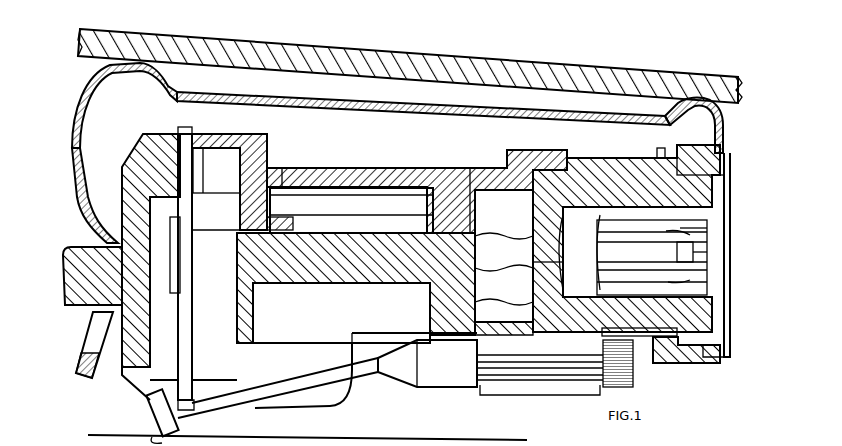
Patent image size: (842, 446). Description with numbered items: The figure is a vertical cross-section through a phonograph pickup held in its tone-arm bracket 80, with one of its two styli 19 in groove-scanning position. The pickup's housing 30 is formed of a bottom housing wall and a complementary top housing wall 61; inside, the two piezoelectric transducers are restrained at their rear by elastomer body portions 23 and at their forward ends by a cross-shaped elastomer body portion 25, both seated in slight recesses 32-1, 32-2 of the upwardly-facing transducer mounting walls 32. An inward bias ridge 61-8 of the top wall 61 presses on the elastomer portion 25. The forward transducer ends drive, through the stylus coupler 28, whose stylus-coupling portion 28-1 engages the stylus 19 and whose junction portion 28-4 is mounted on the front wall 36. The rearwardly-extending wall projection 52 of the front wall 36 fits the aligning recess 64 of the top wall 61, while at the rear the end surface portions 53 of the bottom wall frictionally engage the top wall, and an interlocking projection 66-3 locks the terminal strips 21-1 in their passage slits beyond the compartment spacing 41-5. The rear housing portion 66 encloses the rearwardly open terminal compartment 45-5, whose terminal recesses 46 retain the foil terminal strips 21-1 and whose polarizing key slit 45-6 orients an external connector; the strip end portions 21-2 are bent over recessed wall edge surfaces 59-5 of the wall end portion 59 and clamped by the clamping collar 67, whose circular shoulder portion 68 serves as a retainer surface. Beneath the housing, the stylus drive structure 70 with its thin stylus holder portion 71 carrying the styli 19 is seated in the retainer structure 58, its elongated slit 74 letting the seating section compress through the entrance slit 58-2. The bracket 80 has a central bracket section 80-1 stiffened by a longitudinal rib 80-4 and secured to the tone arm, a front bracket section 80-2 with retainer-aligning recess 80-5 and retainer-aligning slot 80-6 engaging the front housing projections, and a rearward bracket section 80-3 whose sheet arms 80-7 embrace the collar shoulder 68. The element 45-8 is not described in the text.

The stylus 19 is at (144, 398).
The terminal strips 21-1 is at (498, 242).
The foil strip end portion 21-2 is at (700, 221).
The elastomer body portions 23 is at (498, 210).
The cross-shaped elastomer body portion 25 is at (276, 168).
The stylus coupler 28 is at (189, 328).
The stylus-coupling portion 28-1 is at (192, 406).
The junction portion 28-4 is at (210, 133).
The housing 30 is at (364, 156).
The transducer mounting walls 32 is at (348, 222).
The recess 32-1 is at (470, 188).
The recess 32-2 is at (281, 224).
The front wall 36 is at (120, 172).
The compartment spacing 41-5 is at (498, 168).
The terminal compartment 45-5 is at (700, 248).
The polarizing key slit 45-6 is at (704, 256).
The bottom plate 45-8 is at (640, 342).
The terminal recesses 46 is at (652, 257).
The wall projection 52 is at (146, 148).
The end surface portions 53 is at (528, 312).
The retainer structure 58 is at (486, 390).
The entrance slit 58-2 is at (512, 386).
The rearwardly-projecting wall end portion 59 is at (720, 312).
The recessed wall edge surfaces 59-5 is at (710, 231).
The top housing wall 61 is at (400, 170).
The inward bias ridge 61-8 is at (242, 196).
The aligning recess 64 is at (178, 128).
The rear housing portion 66 is at (600, 138).
The interlocking projection 66-3 is at (494, 276).
The clamping collar 67 is at (666, 140).
The circular shoulder portion 68 is at (732, 150).
The stylus drive structure 70 is at (389, 382).
The stylus holder portion 71 is at (298, 378).
The elongated slit 74 is at (570, 384).
The bracket 80 is at (392, 209).
The central bracket section 80-1 is at (502, 88).
The front bracket section 80-2 is at (75, 162).
The rearward bracket section 80-3 is at (724, 148).
The longitudinal rib 80-4 is at (340, 98).
The retainer-aligning recess 80-5 is at (92, 310).
The retainer-aligning slot 80-6 is at (88, 231).
The sheet arms 80-7 is at (718, 360).